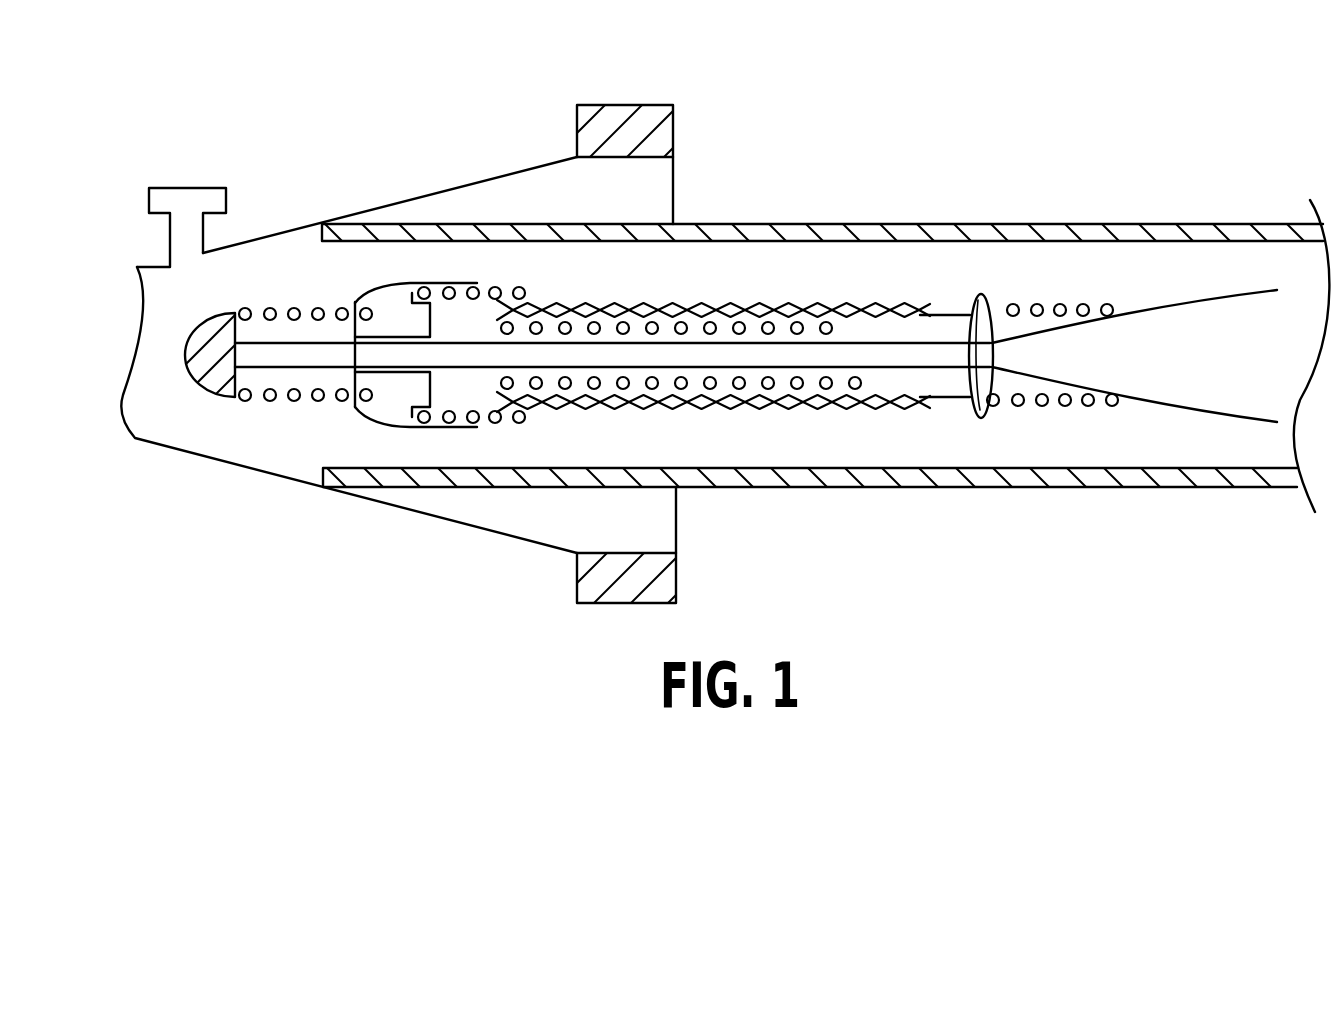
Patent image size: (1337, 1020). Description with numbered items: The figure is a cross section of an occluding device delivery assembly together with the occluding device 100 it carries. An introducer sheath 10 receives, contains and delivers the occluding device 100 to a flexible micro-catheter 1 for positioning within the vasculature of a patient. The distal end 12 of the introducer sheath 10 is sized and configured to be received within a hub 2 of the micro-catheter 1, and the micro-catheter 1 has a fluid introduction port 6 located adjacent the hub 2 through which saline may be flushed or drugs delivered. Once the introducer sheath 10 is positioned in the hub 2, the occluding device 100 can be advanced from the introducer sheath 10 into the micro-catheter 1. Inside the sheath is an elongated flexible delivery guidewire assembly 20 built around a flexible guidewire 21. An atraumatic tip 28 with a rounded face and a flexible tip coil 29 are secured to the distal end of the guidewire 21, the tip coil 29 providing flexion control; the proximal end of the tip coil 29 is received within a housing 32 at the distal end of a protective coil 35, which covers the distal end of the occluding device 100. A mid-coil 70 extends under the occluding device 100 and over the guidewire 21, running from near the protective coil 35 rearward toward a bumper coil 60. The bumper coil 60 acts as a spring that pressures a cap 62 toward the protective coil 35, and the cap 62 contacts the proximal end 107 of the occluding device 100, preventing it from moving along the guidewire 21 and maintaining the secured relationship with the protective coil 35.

The micro-catheter 1 is at (239, 244).
The hub 2 is at (643, 104).
The fluid introduction port 6 is at (206, 176).
The introducer sheath 10 is at (992, 223).
The distal end 12 is at (337, 268).
The delivery guidewire assembly 20 is at (902, 330).
The guidewire 21 is at (333, 343).
The tip 28 is at (190, 378).
The tip coil 29 is at (293, 405).
The housing 32 is at (393, 412).
The protective coil 35 is at (473, 427).
The bumper coil 60 is at (1062, 303).
The cap 62 is at (975, 308).
The mid-coil 70 is at (565, 322).
The occluding device 100 is at (737, 300).
The proximal end 107 is at (940, 400).